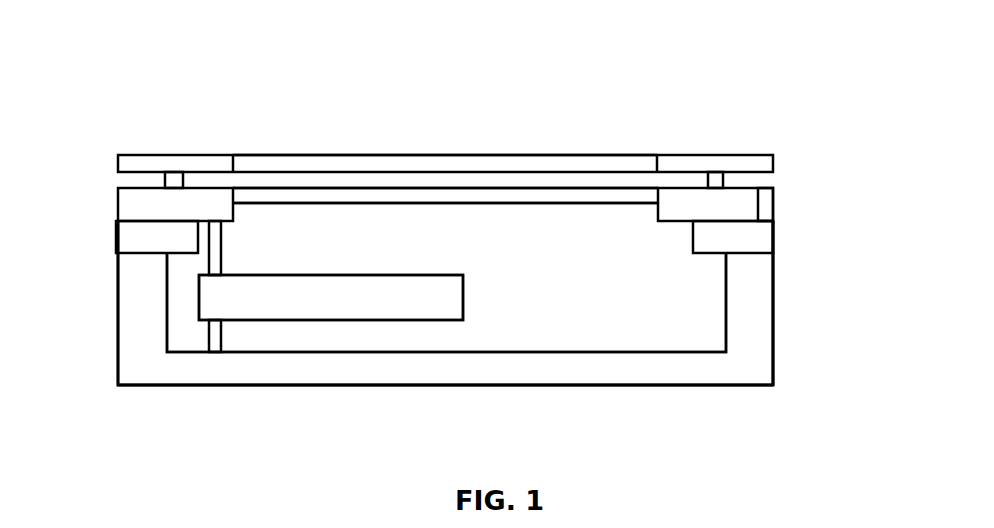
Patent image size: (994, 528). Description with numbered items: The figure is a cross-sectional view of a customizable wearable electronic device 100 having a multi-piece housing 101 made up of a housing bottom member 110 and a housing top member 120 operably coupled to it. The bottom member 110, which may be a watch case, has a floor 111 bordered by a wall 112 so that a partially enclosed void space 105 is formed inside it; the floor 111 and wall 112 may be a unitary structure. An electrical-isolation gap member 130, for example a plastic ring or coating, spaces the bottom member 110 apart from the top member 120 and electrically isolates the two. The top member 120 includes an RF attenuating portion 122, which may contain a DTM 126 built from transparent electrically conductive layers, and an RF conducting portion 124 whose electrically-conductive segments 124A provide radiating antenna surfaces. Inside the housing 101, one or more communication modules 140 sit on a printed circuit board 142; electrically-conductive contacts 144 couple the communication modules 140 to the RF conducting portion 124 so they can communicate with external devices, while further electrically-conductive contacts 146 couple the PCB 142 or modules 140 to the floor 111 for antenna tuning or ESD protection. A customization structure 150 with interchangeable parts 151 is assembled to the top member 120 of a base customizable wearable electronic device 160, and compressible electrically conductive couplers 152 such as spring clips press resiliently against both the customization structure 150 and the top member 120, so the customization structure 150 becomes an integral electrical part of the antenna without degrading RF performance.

The customizable wearable electronic device 100 is at (807, 56).
The multi-piece housing 101 is at (834, 290).
The void space 105 is at (446, 302).
The housing bottom member 110 is at (358, 394).
The floor 111 is at (603, 386).
The wall 112 is at (773, 318).
The housing top member 120 is at (556, 214).
The RF attenuating portion 122 is at (470, 205).
The RF conducting portion 124 is at (445, 204).
The electrically-conductive segment 124A is at (762, 208).
The DTM 126 is at (415, 196).
The electrical-isolation gap member 130 is at (444, 237).
The communication module 140 is at (331, 297).
The printed circuit board 142 is at (331, 297).
The electrically-conductive contact 144 is at (223, 242).
The electrically-conductive contact 146 is at (223, 332).
The customization structure 150 is at (527, 134).
The interchangeable part 151 is at (715, 155).
The electrically conductive coupler 152 is at (719, 183).
The base customizable wearable electronic device 160 is at (102, 188).